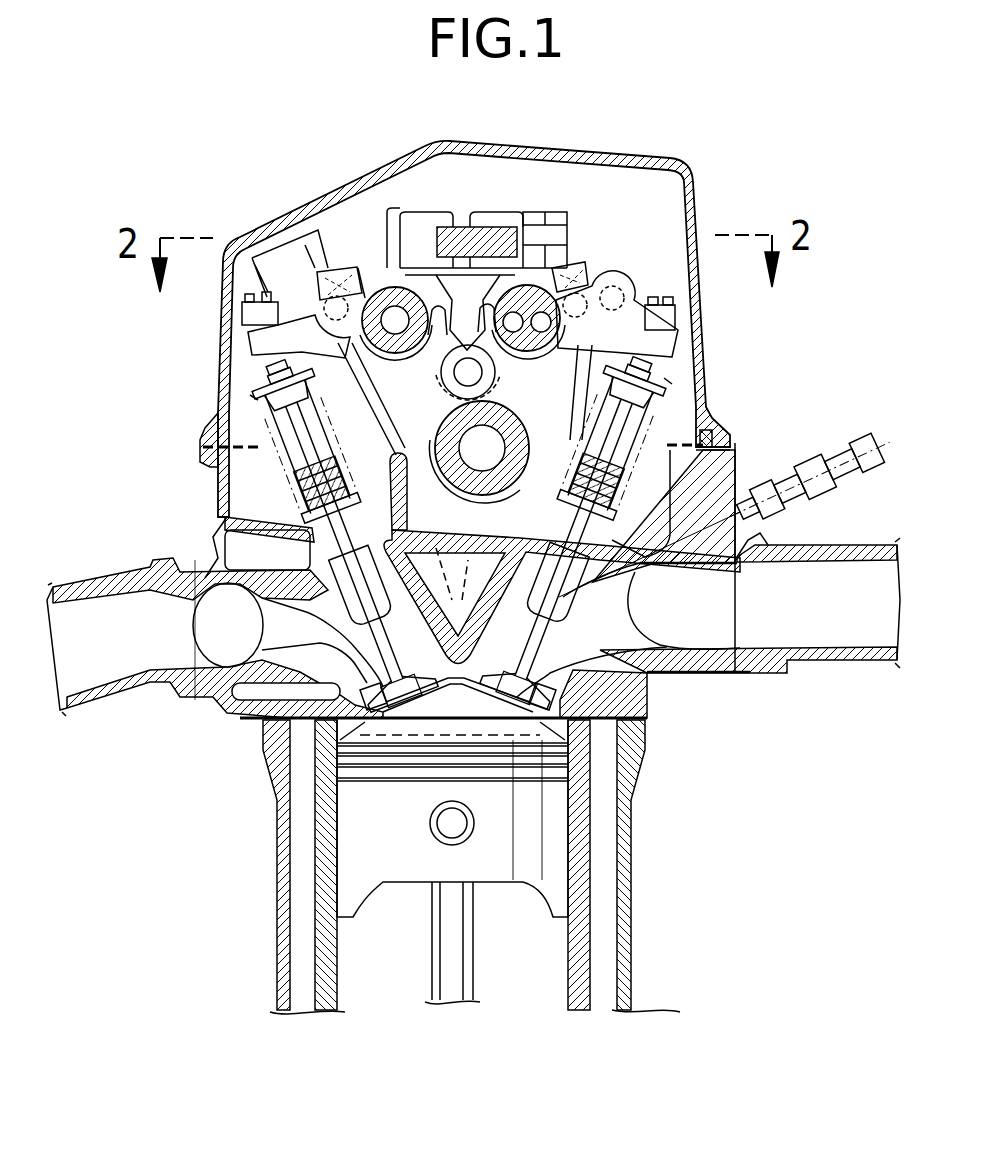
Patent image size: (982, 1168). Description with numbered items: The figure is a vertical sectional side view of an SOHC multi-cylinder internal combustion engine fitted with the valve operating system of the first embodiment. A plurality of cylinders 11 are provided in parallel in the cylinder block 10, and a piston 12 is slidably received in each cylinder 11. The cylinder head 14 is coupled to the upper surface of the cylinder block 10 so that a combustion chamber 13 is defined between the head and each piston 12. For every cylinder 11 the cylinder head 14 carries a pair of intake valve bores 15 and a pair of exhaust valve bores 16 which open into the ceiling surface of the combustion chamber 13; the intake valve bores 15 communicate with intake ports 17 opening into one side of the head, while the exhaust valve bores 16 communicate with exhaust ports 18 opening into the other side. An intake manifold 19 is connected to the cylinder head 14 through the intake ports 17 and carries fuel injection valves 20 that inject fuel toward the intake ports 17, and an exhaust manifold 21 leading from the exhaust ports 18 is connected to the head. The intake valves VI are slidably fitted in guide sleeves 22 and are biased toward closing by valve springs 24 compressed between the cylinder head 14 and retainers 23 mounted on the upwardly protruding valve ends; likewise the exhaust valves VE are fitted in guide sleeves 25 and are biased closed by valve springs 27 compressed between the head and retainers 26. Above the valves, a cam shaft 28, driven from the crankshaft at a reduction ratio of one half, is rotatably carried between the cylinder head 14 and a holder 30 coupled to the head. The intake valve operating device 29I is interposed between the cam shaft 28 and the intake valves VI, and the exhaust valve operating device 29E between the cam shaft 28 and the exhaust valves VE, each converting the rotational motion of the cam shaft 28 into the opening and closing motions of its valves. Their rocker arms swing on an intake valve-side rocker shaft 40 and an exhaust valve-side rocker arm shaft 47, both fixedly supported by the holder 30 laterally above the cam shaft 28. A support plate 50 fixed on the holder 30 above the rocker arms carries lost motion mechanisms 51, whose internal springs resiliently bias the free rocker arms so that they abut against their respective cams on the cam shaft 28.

The cylinder block 10 is at (640, 878).
The cylinder 11 is at (591, 960).
The piston 12 is at (390, 868).
The combustion chamber 13 is at (448, 712).
The cylinder head 14 is at (682, 672).
The intake valve bore 15 is at (533, 690).
The exhaust valve bore 16 is at (383, 673).
The intake port 17 is at (720, 660).
The exhaust port 18 is at (217, 655).
The intake manifold 19 is at (849, 660).
The fuel injection valve 20 is at (832, 508).
The exhaust manifold 21 is at (125, 580).
The guide sleeve 22 is at (565, 548).
The retainer 23 is at (667, 380).
The valve spring 24 is at (664, 558).
The guide sleeve 25 is at (312, 555).
The retainer 26 is at (255, 383).
The valve spring 27 is at (233, 500).
The cam shaft 28 is at (510, 433).
The exhaust valve operating device 29E is at (356, 262).
The intake valve operating device 29I is at (628, 266).
The holder 30 is at (407, 407).
The intake valve-side rocker shaft 40 is at (529, 305).
The exhaust valve-side rocker arm shaft 47 is at (350, 337).
The support plate 50 is at (463, 240).
The lost motion mechanism 51 is at (427, 205).
The exhaust valve VE is at (335, 610).
The intake valve VI is at (541, 618).